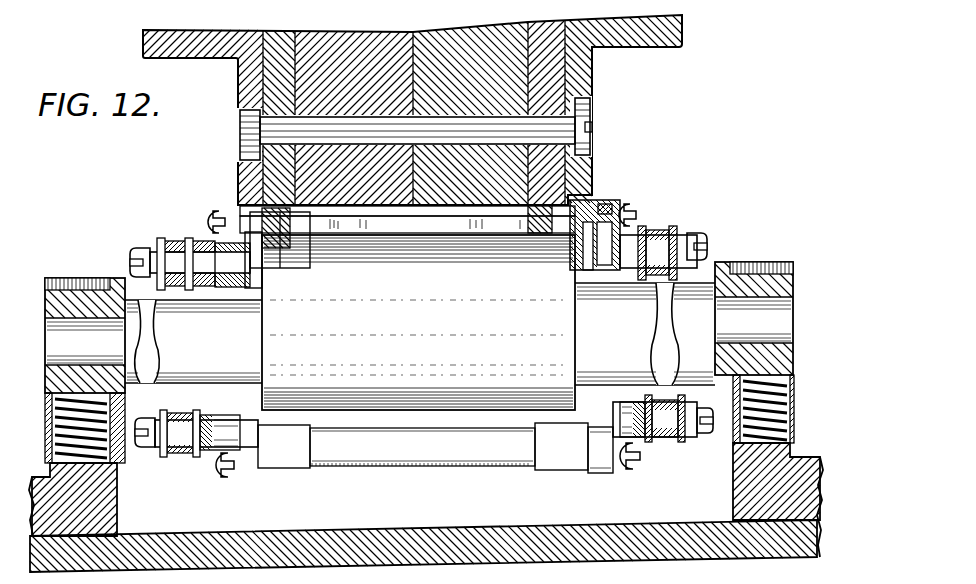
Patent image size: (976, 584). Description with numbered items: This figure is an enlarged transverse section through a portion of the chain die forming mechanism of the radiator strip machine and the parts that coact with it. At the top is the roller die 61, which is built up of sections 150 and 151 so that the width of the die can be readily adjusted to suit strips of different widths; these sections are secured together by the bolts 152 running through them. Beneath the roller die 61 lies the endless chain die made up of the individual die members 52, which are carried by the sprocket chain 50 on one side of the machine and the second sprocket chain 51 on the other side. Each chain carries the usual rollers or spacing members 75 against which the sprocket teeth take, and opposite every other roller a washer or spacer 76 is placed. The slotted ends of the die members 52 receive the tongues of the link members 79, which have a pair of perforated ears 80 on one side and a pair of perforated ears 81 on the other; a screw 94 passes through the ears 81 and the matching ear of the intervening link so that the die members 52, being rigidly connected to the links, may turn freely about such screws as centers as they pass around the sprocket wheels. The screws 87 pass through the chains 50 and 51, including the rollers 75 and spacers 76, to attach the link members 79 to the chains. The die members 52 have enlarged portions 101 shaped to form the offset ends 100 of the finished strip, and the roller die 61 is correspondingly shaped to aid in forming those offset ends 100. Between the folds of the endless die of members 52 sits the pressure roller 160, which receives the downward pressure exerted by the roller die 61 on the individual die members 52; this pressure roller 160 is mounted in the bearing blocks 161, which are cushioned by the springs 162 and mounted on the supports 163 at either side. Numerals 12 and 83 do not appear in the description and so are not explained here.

The plate 12 is at (453, 233).
The sprocket chain 50 is at (192, 240).
The second sprocket chain 51 is at (644, 226).
The die members 52 is at (354, 248).
The roller die 61 is at (684, 24).
The rollers or spacing members 75 is at (173, 241).
The washer or spacer 76 is at (212, 286).
The link members 79 is at (222, 211).
The perforated ears 80 is at (608, 268).
The perforated ears 81 is at (237, 284).
The key 83 is at (615, 208).
The screws 87 is at (136, 252).
The screw 94 is at (652, 300).
The offset ends 100 is at (290, 242).
The enlarged portions 101 is at (545, 487).
The section 150 is at (500, 67).
The section 151 is at (277, 87).
The bolts 152 is at (553, 125).
The pressure roller 160 is at (387, 287).
The bearing blocks 161 is at (70, 302).
The springs 162 is at (58, 416).
The supports 163 is at (100, 510).